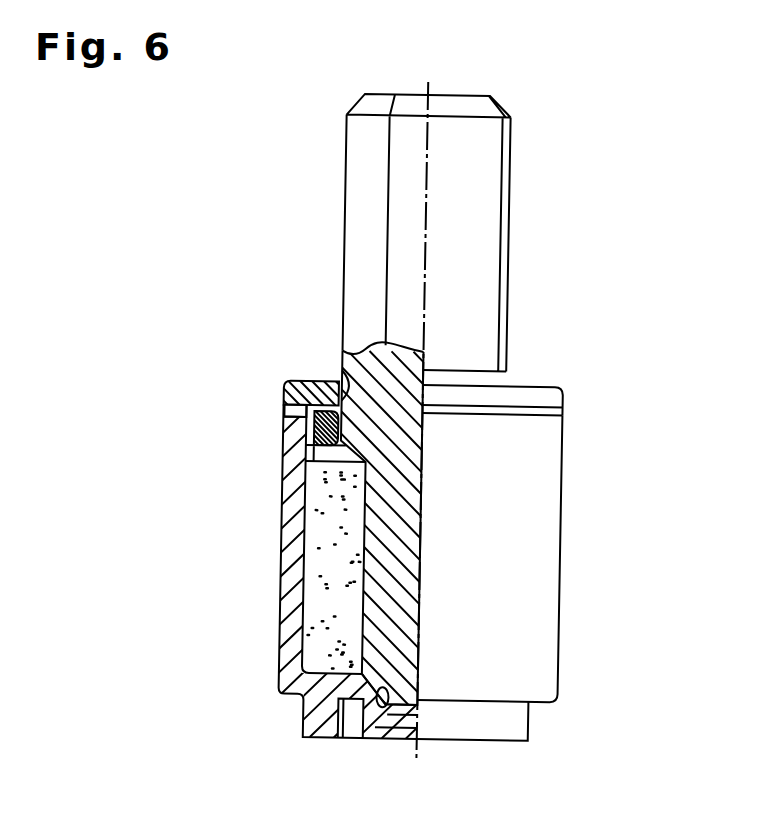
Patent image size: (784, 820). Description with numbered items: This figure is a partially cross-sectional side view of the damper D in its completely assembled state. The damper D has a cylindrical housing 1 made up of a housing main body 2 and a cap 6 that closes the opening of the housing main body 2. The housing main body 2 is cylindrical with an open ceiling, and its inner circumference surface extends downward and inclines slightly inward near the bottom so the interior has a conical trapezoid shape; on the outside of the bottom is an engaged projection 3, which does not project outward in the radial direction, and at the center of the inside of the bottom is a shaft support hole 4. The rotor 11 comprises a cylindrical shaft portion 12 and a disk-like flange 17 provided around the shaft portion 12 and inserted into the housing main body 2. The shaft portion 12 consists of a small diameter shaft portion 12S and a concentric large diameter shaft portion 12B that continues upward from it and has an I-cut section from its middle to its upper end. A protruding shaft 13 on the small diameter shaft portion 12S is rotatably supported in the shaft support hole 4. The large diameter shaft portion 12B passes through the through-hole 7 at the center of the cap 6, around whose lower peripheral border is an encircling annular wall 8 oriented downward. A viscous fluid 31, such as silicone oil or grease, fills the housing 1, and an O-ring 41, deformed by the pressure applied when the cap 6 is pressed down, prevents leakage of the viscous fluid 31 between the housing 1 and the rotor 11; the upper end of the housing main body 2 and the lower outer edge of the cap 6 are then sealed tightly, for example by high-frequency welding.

The housing 1 is at (372, 522).
The housing main body 2 is at (292, 626).
The engaged projection 3 is at (512, 727).
The shaft support hole 4 is at (397, 704).
The cap 6 is at (549, 392).
The through-hole 7 is at (344, 372).
The encircling annular wall 8 is at (290, 420).
The rotor 11 is at (338, 164).
The shaft portion 12 is at (383, 417).
The large diameter shaft portion 12B is at (482, 177).
The small diameter shaft portion 12S is at (381, 638).
The protruding shaft 13 is at (413, 707).
The flange 17 is at (312, 442).
The viscous fluid 31 is at (318, 560).
The O-ring 41 is at (313, 430).
The damper D is at (516, 241).